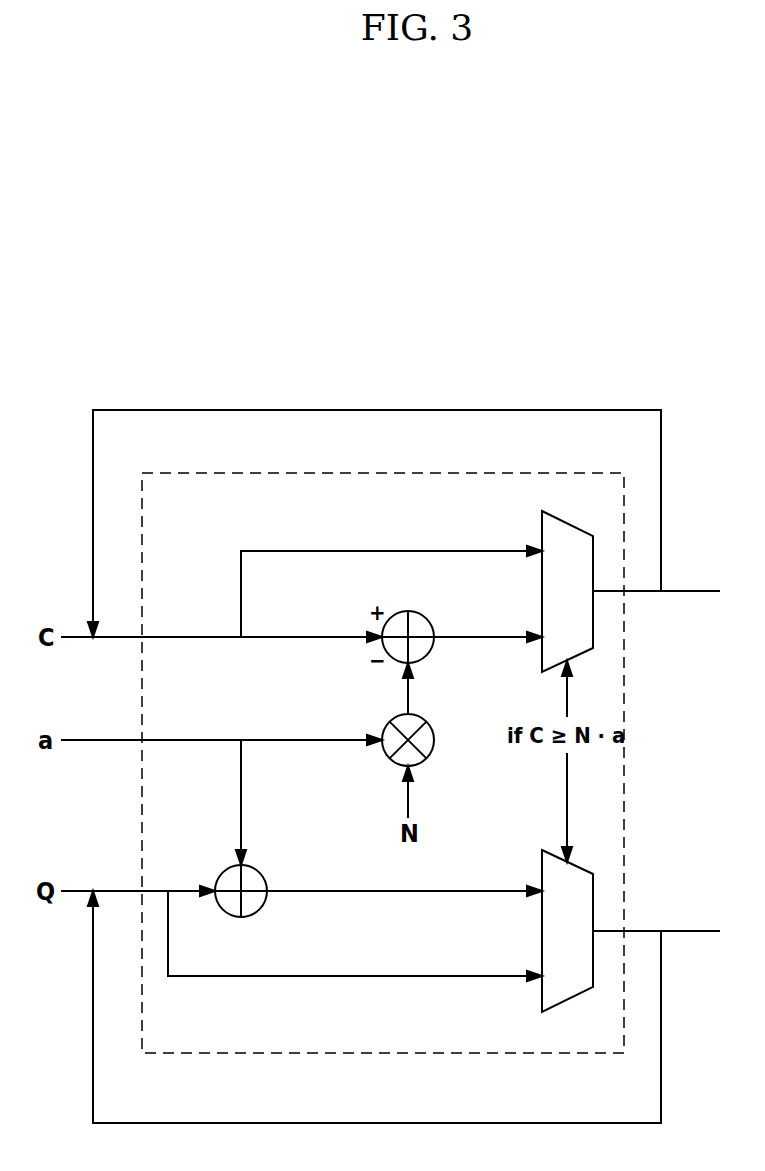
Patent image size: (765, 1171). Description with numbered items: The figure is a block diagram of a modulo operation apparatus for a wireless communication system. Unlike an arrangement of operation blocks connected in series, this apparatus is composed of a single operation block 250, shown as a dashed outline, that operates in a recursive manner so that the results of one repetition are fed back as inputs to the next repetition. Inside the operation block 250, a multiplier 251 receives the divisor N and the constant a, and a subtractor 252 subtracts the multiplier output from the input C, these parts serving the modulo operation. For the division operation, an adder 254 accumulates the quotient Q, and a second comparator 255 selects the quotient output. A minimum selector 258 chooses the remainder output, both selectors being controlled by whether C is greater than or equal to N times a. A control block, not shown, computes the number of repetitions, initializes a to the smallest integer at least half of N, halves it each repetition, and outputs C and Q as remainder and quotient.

The operation block 250 is at (225, 473).
The multiplier 251 is at (428, 721).
The subtractor 252 is at (426, 619).
The adder 254 is at (262, 872).
The second comparator 255 is at (542, 1003).
The min selector 258 is at (542, 518).